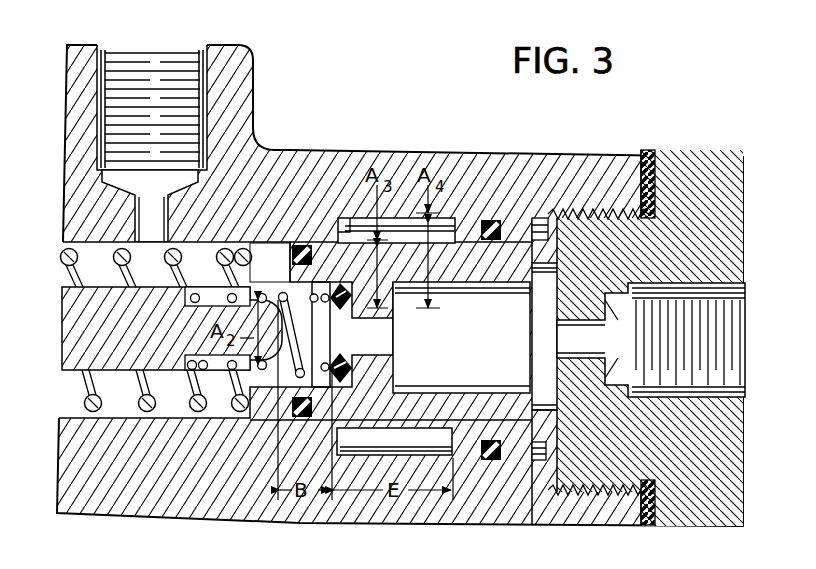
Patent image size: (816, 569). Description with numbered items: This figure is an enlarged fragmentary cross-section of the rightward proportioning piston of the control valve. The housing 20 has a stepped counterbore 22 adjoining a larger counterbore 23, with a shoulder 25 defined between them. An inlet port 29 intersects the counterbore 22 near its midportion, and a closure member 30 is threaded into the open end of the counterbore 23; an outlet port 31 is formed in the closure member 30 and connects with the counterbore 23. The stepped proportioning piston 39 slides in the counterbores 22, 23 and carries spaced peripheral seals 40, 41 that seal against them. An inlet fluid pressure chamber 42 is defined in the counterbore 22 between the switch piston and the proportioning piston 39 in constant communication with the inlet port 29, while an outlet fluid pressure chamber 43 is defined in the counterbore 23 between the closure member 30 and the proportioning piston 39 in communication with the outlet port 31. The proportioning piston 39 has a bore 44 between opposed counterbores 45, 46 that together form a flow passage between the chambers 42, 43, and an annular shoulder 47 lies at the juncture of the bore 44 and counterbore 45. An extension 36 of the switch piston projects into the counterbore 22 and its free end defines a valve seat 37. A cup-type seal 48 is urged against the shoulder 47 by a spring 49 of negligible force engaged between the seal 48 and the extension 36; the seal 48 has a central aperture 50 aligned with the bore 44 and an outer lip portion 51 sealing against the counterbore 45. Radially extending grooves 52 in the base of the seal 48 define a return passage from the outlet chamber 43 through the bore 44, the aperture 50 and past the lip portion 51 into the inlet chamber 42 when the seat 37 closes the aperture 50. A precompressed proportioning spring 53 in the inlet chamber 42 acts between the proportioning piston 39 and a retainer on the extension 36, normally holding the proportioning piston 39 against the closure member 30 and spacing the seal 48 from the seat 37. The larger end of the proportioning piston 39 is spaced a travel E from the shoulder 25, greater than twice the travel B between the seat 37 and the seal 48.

The housing 20 is at (598, 152).
The counterbore 22 is at (200, 242).
The counterbore 23 is at (512, 220).
The shoulder 25 is at (349, 218).
The inlet port 29 is at (198, 56).
The closure member 30 is at (712, 209).
The outlet port 31 is at (742, 396).
The extension 36 is at (120, 339).
The valve seat 37 is at (268, 298).
The proportioning piston 39 is at (514, 456).
The peripheral seal 40 is at (302, 244).
The peripheral seal 41 is at (489, 461).
The inlet fluid pressure chamber 42 is at (121, 405).
The outlet fluid pressure chamber 43 is at (548, 405).
The bore 44 is at (396, 347).
The counterbore 45 is at (262, 392).
The counterbore 46 is at (493, 393).
The annular shoulder 47 is at (350, 374).
The cup-type seal 48 is at (355, 366).
The spring 49 is at (188, 366).
The central aperture 50 is at (340, 349).
The lip portion 51 is at (325, 388).
The radially extending grooves 52 is at (352, 290).
The proportioning spring 53 is at (60, 260).